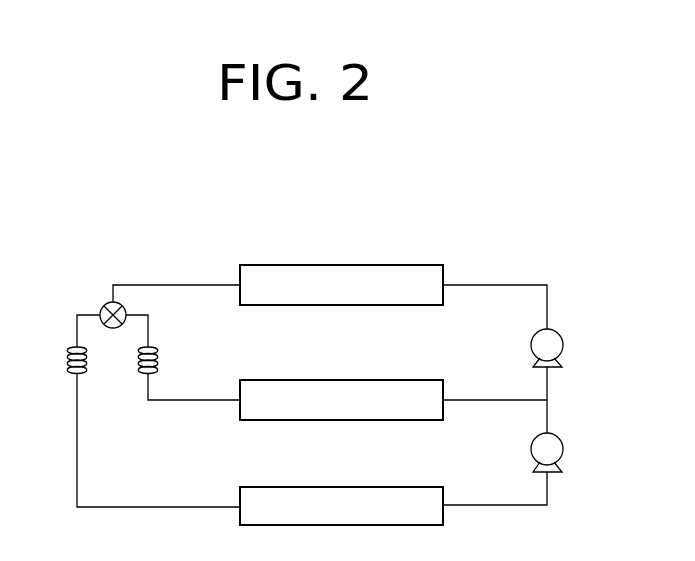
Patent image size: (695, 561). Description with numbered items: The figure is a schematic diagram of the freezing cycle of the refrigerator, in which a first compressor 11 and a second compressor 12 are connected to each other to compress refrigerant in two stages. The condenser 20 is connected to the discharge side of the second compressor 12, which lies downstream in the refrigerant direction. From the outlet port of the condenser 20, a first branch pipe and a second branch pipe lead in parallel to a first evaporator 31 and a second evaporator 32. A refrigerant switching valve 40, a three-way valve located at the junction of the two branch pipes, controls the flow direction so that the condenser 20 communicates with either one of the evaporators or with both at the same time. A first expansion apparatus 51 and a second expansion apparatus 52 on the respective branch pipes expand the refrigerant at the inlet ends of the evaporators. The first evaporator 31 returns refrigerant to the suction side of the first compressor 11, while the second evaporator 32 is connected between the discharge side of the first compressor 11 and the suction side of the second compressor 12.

The first compressor 11 is at (563, 449).
The second compressor 12 is at (563, 345).
The condenser 20 is at (340, 265).
The first evaporator 31 is at (341, 487).
The second evaporator 32 is at (340, 380).
The refrigerant switching valve 40 is at (103, 306).
The first expansion apparatus 51 is at (66, 358).
The second expansion apparatus 52 is at (156, 358).